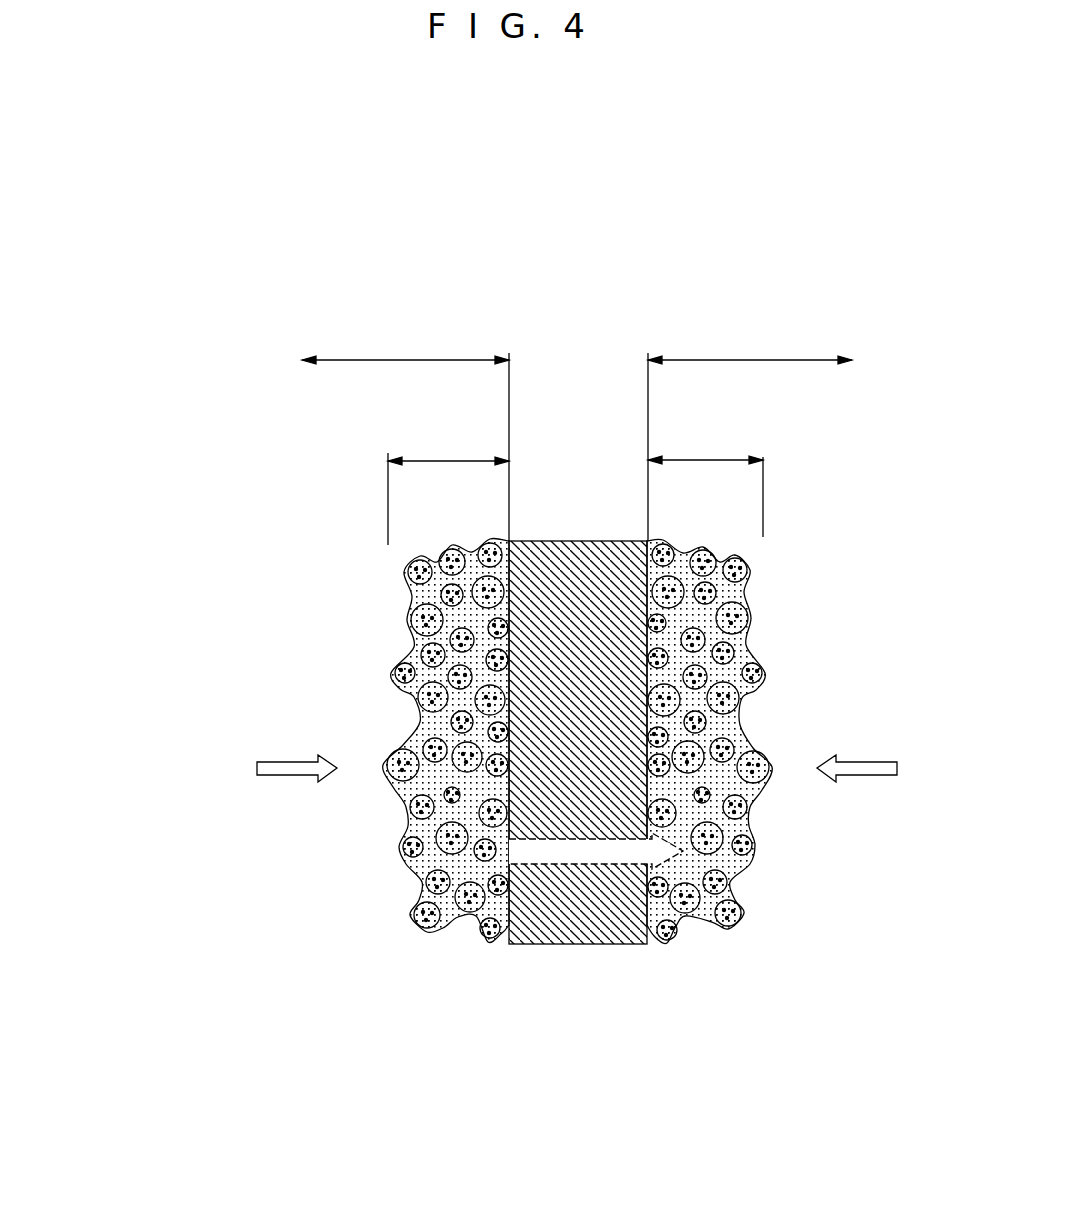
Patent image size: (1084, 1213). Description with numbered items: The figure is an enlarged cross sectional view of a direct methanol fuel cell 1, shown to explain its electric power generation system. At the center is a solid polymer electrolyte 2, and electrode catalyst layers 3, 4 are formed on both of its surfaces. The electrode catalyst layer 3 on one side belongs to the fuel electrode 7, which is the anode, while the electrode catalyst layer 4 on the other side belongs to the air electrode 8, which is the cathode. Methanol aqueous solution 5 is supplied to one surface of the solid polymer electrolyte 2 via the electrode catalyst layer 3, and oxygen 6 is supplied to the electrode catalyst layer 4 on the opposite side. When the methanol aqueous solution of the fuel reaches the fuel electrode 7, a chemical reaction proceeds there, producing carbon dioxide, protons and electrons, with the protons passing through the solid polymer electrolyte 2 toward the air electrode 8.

The fuel cell 1 is at (583, 735).
The solid polymer electrolyte 2 is at (573, 946).
The electrode catalyst layer 3 is at (450, 460).
The electrode catalyst layer 4 is at (705, 458).
The methanol aqueous solution 5 is at (290, 765).
The oxygen 6 is at (867, 765).
The fuel electrode 7 is at (402, 358).
The air electrode 8 is at (749, 358).